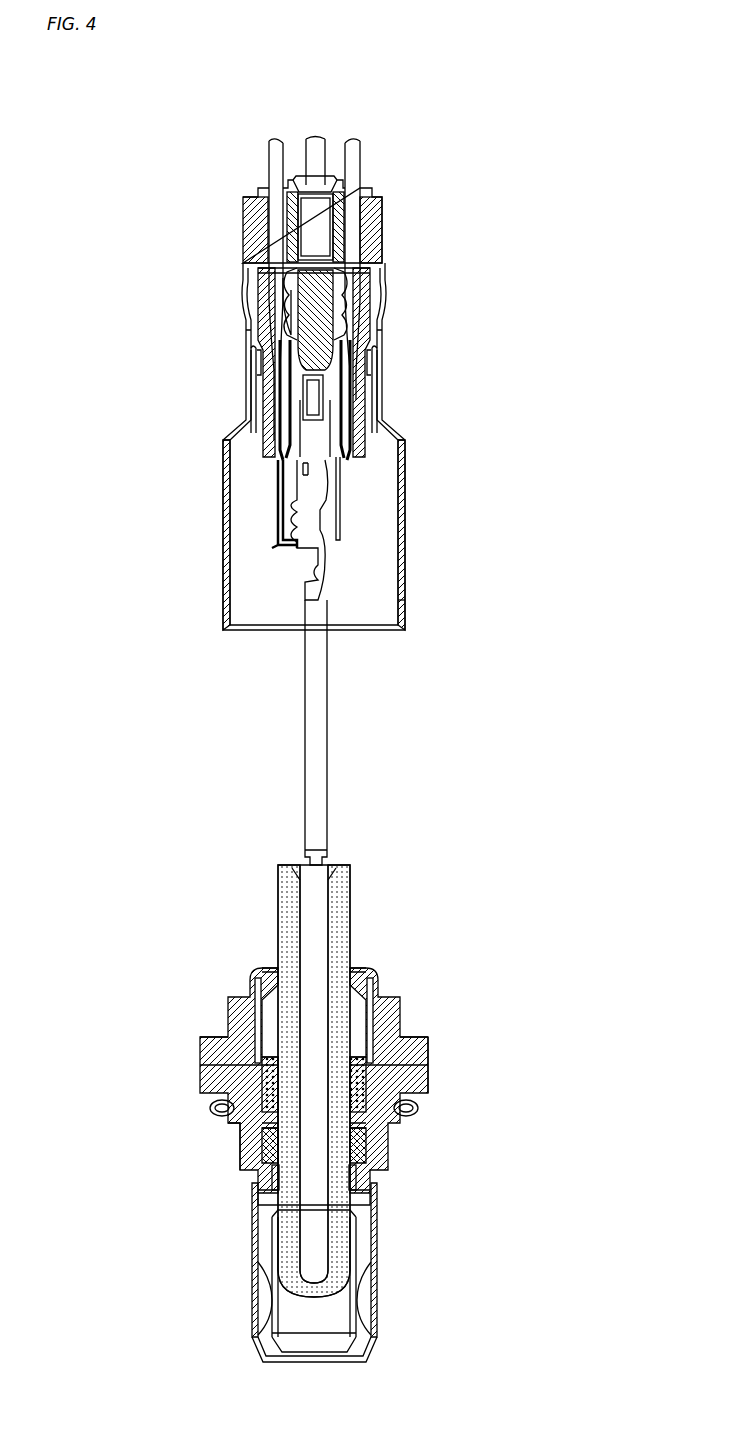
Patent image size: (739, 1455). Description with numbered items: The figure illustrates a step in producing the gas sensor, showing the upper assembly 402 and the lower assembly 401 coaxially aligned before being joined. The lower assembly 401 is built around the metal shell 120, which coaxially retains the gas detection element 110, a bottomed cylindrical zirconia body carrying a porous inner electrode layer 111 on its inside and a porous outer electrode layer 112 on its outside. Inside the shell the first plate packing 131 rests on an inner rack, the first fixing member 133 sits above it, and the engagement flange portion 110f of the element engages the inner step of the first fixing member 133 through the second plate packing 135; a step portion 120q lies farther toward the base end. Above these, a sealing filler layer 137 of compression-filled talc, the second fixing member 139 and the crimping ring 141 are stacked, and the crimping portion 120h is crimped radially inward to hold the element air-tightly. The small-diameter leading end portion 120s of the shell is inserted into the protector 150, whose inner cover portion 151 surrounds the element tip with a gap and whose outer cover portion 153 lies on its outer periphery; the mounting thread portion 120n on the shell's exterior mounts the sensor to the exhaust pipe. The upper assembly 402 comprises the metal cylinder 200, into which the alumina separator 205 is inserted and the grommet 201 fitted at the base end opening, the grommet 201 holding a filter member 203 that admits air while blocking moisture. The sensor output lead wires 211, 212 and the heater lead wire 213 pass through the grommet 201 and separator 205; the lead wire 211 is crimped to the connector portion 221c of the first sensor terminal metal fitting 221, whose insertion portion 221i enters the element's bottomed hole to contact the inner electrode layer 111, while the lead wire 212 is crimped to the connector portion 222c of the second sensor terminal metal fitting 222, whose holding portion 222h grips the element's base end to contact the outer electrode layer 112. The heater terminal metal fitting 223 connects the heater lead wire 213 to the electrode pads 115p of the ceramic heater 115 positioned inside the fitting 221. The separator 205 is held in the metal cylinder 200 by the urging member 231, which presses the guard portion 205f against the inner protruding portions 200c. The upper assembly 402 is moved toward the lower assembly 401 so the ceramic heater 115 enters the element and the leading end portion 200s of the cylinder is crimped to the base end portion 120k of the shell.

The upper assembly 402 is at (558, 128).
The lower assembly 401 is at (558, 858).
The sensor output lead wire 212 is at (272, 140).
The heater lead wire 213 is at (315, 137).
The sensor output lead wire 211 is at (358, 140).
The filter member 203 is at (372, 200).
The grommet 201 is at (345, 233).
The metal cylinder 200 is at (405, 500).
The inner protruding portion 200c is at (383, 292).
The leading end portion 200s is at (403, 608).
The separator 205 is at (368, 404).
The guard portion 205f is at (372, 338).
The urging member 231 is at (378, 358).
The first sensor terminal metal fitting 221 is at (335, 437).
The connector portion 221c is at (336, 310).
The insertion portion 221i is at (320, 540).
The second sensor terminal metal fitting 222 is at (272, 363).
The connector portion 222c is at (285, 300).
The holding portion 222h is at (278, 495).
The heater terminal metal fitting 223 is at (310, 400).
The ceramic heater 115 is at (318, 750).
The electrode pad 115p is at (300, 428).
The gas detection element 110 is at (352, 903).
The metal shell 120 is at (200, 998).
The crimping portion 120h is at (372, 968).
The base end portion 120k is at (401, 1020).
The step portion 120q is at (430, 1050).
The mounting thread portion 120n is at (230, 1143).
The leading end portion 120s is at (255, 1205).
The crimping ring 141 is at (367, 978).
The second fixing member 139 is at (374, 985).
The sealing filler layer 137 is at (362, 1073).
The inner electrode layer 111 is at (300, 1075).
The engagement flange portion 110f is at (410, 1112).
The second plate packing 135 is at (366, 1135).
The first fixing member 133 is at (366, 1145).
The first plate packing 131 is at (360, 1163).
The outer electrode layer 112 is at (258, 1190).
The protector 150 is at (407, 1272).
The outer cover portion 153 is at (377, 1265).
The inner cover portion 151 is at (358, 1300).